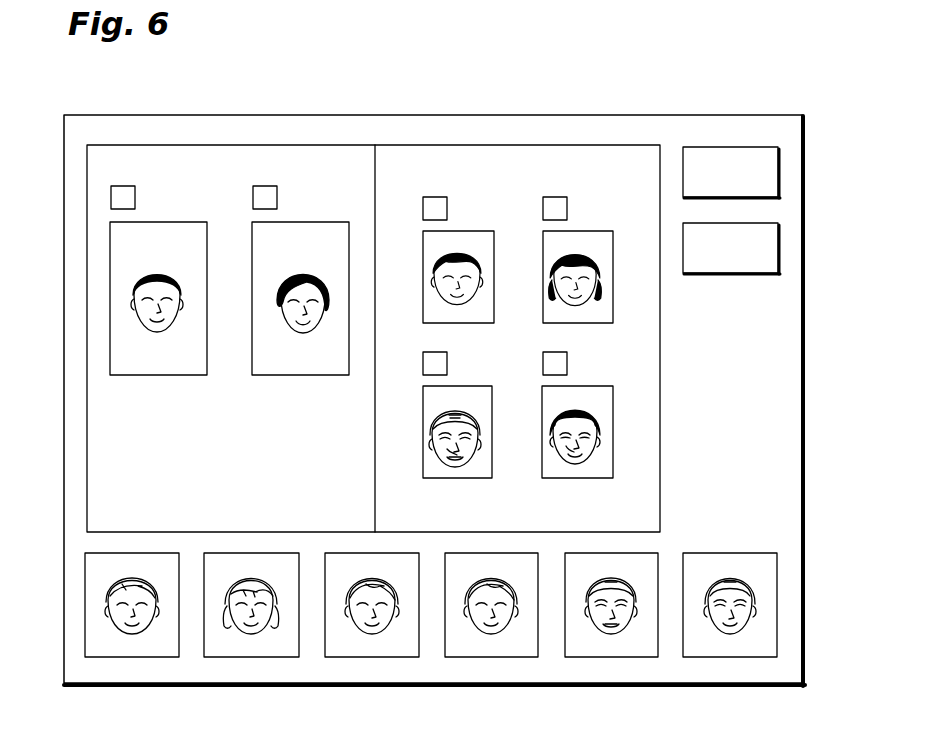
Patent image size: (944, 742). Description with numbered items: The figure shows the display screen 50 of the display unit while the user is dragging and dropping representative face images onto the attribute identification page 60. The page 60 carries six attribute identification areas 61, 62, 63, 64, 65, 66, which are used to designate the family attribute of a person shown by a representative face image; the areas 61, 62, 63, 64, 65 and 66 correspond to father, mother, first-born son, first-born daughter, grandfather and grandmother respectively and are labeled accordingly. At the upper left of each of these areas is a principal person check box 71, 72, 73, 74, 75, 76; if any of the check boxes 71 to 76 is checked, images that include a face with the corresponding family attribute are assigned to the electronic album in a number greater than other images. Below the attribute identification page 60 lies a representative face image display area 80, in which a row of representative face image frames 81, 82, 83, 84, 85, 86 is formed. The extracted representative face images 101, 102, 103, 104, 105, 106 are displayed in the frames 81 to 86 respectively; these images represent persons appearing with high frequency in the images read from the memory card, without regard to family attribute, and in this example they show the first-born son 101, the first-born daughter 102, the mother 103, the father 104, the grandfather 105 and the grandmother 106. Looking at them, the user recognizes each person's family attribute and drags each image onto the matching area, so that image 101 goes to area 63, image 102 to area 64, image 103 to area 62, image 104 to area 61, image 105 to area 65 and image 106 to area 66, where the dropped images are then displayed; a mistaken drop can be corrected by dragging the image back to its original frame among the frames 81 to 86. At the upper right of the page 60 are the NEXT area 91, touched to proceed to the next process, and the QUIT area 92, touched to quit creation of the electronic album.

The display screen 50 is at (785, 383).
The attribute identification page 60 is at (432, 145).
The attribute identification area 61 is at (160, 221).
The attribute identification area 62 is at (250, 292).
The attribute identification area 63 is at (423, 277).
The attribute identification area 64 is at (580, 230).
The attribute identification area 65 is at (492, 446).
The attribute identification area 66 is at (613, 444).
The principal person check box 71 is at (138, 196).
The principal person check box 72 is at (278, 197).
The principal person check box 73 is at (423, 210).
The principal person check box 74 is at (567, 208).
The principal person check box 75 is at (447, 363).
The principal person check box 76 is at (567, 366).
The representative face image display area 80 is at (776, 519).
The representative face image frame 81 is at (142, 657).
The representative face image frame 82 is at (263, 657).
The representative face image frame 83 is at (380, 657).
The representative face image frame 84 is at (502, 657).
The representative face image frame 85 is at (615, 657).
The representative face image frame 86 is at (733, 657).
The NEXT area 91 is at (778, 175).
The QUIT area 92 is at (778, 250).
The representative face image 101 is at (140, 575).
The representative face image 102 is at (260, 573).
The representative face image 103 is at (368, 572).
The representative face image 104 is at (475, 577).
The representative face image 105 is at (597, 580).
The representative face image 106 is at (723, 575).